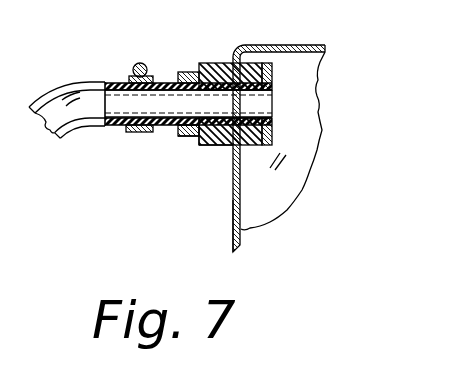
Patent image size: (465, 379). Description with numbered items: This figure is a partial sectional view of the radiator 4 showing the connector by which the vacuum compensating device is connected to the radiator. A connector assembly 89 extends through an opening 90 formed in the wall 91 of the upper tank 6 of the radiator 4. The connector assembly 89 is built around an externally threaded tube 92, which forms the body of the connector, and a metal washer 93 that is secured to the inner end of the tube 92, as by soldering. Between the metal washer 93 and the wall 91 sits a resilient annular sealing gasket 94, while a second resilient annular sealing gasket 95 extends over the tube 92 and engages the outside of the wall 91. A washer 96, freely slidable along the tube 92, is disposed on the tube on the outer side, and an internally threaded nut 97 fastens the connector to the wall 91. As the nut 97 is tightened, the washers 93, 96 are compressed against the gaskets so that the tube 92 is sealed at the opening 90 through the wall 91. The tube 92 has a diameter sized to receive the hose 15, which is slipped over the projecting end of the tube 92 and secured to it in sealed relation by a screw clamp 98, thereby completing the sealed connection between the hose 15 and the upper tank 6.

The radiator 4 is at (325, 70).
The upper tank 6 is at (273, 43).
The hose 15 is at (49, 122).
The connector assembly 89 is at (192, 60).
The opening 90 is at (235, 118).
The wall 91 is at (232, 213).
The externally threaded tube 92 is at (209, 96).
The metal washer 93 is at (268, 72).
The resilient annular sealing gasket 94 is at (252, 146).
The second resilient annular sealing gasket 95 is at (215, 146).
The washer 96 is at (198, 145).
The nut 97 is at (178, 134).
The screw clamp 98 is at (131, 76).